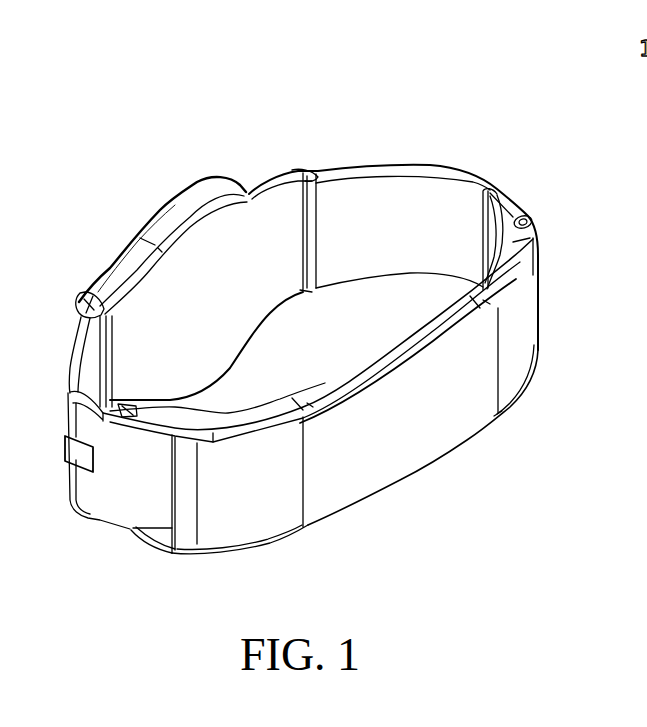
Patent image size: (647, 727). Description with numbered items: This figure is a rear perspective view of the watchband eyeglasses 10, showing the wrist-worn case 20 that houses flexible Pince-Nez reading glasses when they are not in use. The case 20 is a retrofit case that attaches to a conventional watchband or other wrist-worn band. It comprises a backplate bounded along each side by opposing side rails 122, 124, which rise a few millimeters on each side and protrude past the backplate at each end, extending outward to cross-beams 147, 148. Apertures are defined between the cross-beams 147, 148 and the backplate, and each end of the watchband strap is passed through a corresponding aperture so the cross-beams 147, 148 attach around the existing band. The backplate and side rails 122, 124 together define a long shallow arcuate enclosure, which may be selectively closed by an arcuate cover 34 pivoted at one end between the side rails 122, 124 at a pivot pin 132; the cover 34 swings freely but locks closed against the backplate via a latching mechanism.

The watchband eyeglasses 10 is at (487, 108).
The wrist-worn case 20 is at (520, 203).
The arcuate cover 34 is at (383, 438).
The side rail 122 is at (277, 417).
The side rail 124 is at (278, 538).
The pivot pin 132 is at (538, 220).
The cross-beam 147 is at (128, 412).
The cross-beam 148 is at (481, 204).